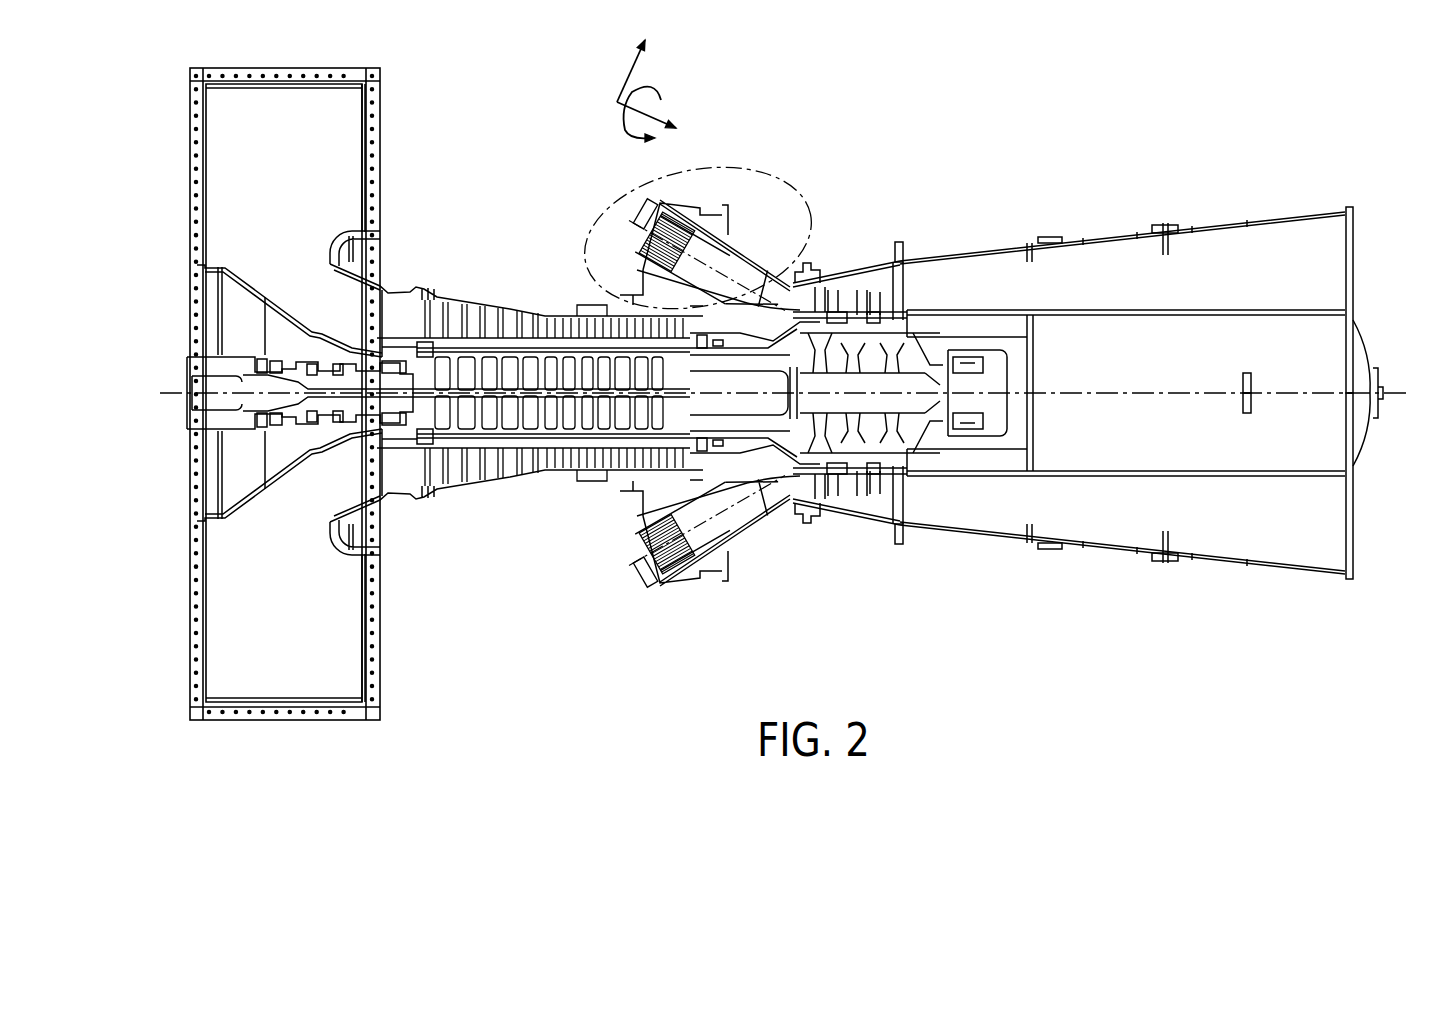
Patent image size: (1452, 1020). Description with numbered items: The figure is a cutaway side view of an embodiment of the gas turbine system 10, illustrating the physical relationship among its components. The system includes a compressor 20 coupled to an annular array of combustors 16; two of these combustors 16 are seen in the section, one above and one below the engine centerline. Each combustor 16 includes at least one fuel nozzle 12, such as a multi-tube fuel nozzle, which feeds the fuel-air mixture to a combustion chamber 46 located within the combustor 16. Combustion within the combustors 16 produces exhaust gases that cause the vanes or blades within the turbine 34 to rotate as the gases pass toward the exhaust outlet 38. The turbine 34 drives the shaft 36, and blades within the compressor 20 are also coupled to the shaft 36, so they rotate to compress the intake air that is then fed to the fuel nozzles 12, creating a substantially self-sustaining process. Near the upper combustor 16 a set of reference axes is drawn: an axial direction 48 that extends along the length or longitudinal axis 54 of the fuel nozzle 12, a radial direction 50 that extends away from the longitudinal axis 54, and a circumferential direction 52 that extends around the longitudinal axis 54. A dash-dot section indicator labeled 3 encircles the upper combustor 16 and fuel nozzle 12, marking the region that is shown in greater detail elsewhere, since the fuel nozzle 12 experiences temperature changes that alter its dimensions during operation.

The gas turbine system 10 is at (785, 360).
The fuel nozzle 12 is at (737, 378).
The combustor 16 is at (748, 199).
The compressor 20 is at (470, 318).
The turbine 34 is at (840, 308).
The shaft 36 is at (1402, 392).
The exhaust outlet 38 is at (1105, 268).
The combustion chamber 46 is at (723, 278).
The axial direction 48 is at (655, 110).
The radial direction 50 is at (634, 62).
The circumferential direction 52 is at (622, 124).
The longitudinal axis 54 is at (628, 220).
The section line of FIG. 3 is at (812, 222).